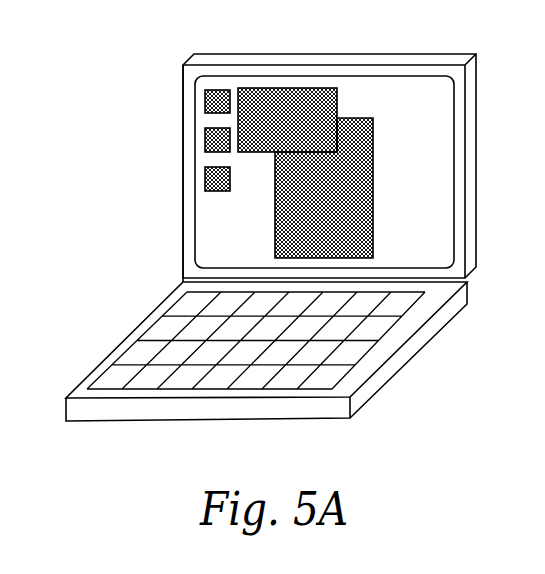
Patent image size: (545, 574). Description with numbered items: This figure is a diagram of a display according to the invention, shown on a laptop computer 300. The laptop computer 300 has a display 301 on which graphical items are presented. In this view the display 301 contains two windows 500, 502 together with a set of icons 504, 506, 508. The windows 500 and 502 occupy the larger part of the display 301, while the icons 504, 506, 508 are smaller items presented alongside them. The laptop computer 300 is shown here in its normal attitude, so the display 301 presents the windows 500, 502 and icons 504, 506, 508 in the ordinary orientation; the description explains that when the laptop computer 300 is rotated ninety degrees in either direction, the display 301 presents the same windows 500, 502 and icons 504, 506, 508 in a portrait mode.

The laptop computer 300 is at (402, 366).
The display 301 is at (442, 193).
The window 500 is at (275, 232).
The window 502 is at (337, 108).
The icon 504 is at (205, 176).
The icon 506 is at (205, 137).
The icon 508 is at (205, 98).